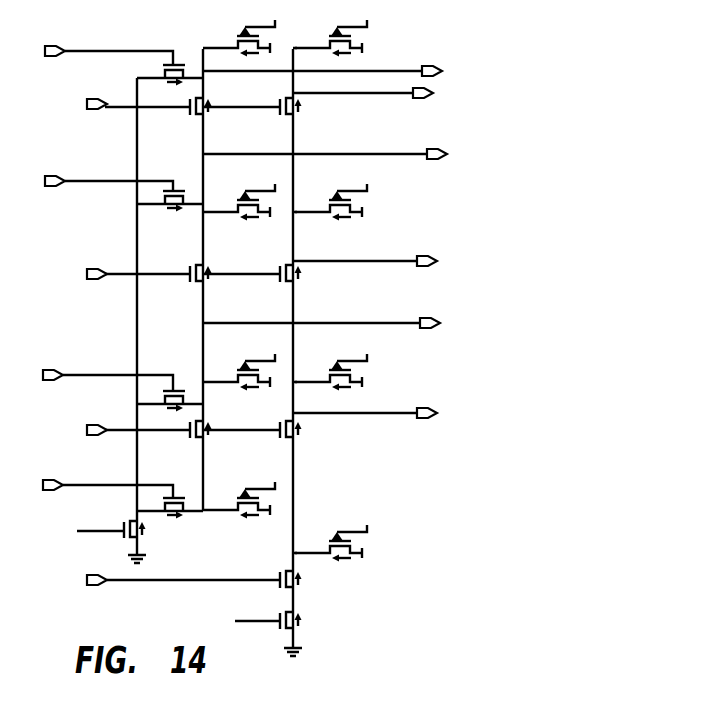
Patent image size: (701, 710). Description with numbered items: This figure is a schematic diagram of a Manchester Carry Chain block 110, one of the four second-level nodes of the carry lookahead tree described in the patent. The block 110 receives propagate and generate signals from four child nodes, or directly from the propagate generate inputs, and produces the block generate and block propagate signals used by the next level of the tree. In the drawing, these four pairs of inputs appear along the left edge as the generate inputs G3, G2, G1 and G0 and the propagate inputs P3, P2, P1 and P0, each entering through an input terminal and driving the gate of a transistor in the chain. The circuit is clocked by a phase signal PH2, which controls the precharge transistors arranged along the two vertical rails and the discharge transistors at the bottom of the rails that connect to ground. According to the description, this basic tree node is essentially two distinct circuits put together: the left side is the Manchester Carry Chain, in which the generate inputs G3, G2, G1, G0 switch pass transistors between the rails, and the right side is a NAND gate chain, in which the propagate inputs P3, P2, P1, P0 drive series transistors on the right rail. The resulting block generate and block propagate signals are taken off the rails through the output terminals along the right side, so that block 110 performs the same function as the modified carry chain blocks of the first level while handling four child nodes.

The Manchester Carry Chain block 110 is at (309, 330).
The phase 2 clock transistors PH2 is at (224, 316).
The generate input G3 is at (93, 52).
The propagate input P3 is at (124, 103).
The generate input G2 is at (93, 181).
The propagate input P2 is at (124, 273).
The generate input G1 is at (96, 377).
The propagate input P1 is at (126, 429).
The generate input G0 is at (93, 485).
The propagate input P0 is at (169, 579).